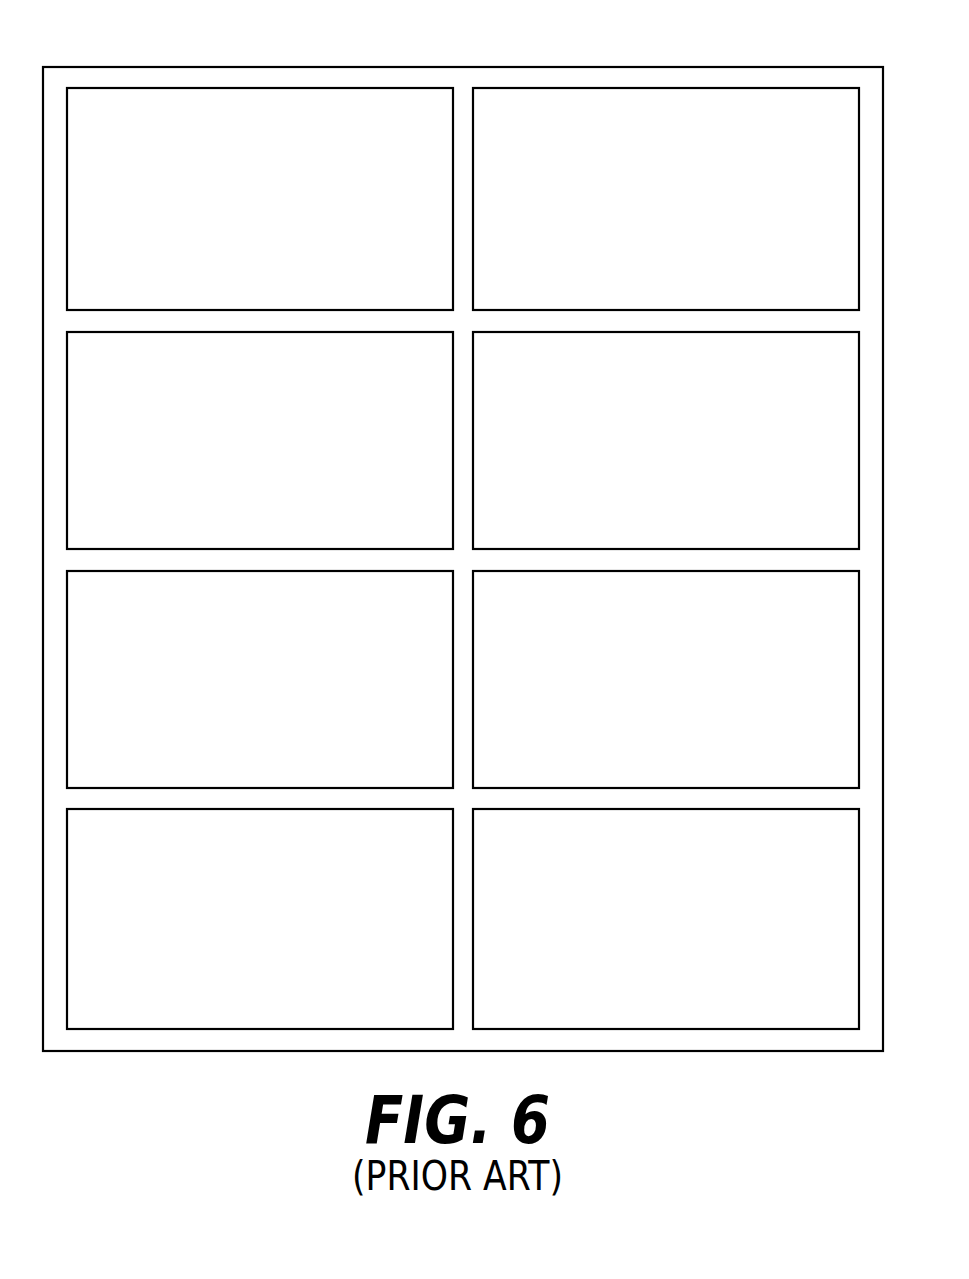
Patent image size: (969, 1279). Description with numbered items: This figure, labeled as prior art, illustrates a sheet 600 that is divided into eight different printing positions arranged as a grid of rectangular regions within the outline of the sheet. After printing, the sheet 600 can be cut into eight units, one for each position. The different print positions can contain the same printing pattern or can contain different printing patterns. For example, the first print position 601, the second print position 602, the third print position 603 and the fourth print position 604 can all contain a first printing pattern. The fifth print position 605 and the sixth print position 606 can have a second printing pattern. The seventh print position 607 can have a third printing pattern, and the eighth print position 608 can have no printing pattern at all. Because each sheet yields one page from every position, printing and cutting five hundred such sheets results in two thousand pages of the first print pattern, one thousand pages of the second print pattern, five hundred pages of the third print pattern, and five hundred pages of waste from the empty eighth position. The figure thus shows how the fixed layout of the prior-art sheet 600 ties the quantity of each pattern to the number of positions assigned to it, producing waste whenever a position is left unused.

The sheet 600 is at (244, 48).
The print position 1 601 is at (283, 266).
The print position 2 602 is at (691, 270).
The print position 3 603 is at (283, 505).
The print position 4 604 is at (691, 507).
The print position 5 605 is at (283, 745).
The print position 6 606 is at (691, 747).
The print position 7 607 is at (283, 984).
The print position 8 608 is at (691, 986).